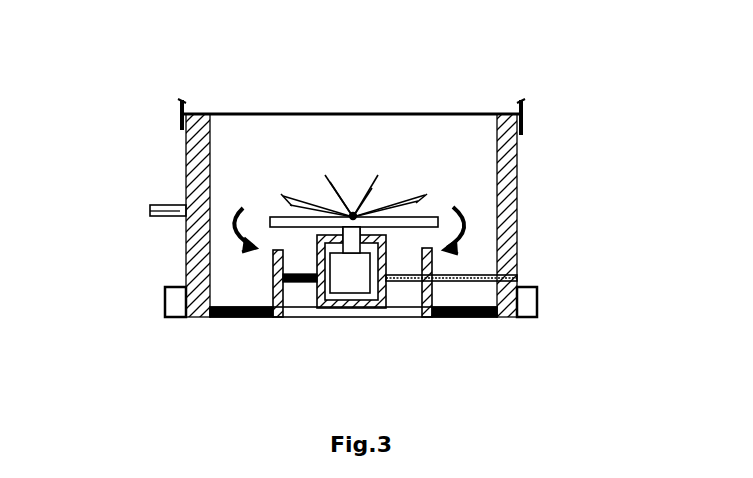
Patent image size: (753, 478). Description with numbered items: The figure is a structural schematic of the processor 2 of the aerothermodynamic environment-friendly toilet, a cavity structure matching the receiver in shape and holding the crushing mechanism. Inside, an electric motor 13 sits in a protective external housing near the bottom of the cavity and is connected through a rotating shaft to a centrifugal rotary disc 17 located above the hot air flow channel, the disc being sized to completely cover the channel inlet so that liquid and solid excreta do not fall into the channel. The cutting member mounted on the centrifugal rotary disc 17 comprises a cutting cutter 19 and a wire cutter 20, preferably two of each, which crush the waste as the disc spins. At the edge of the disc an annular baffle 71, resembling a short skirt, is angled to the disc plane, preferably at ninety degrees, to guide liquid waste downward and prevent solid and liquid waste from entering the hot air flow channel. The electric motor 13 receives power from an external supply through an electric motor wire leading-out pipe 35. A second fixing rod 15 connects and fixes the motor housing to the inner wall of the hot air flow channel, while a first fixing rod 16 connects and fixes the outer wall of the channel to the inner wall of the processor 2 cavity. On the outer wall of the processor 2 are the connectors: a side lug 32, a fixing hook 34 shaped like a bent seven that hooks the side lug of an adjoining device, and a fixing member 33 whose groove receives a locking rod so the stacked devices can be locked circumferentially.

The processor 2 is at (515, 192).
The electric motor 13 is at (357, 282).
The second fixing rod 15 is at (360, 211).
The first fixing rod 16 is at (255, 308).
The centrifugal rotary disc 17 is at (412, 230).
The cutting cutter 19 is at (297, 202).
The wire cutter 20 is at (338, 197).
The side lug 32 is at (537, 288).
The fixing member 33 is at (168, 204).
The fixing hook 34 is at (182, 102).
The electric motor wire leading-out pipe 35 is at (478, 273).
The annular baffle 71 is at (255, 245).